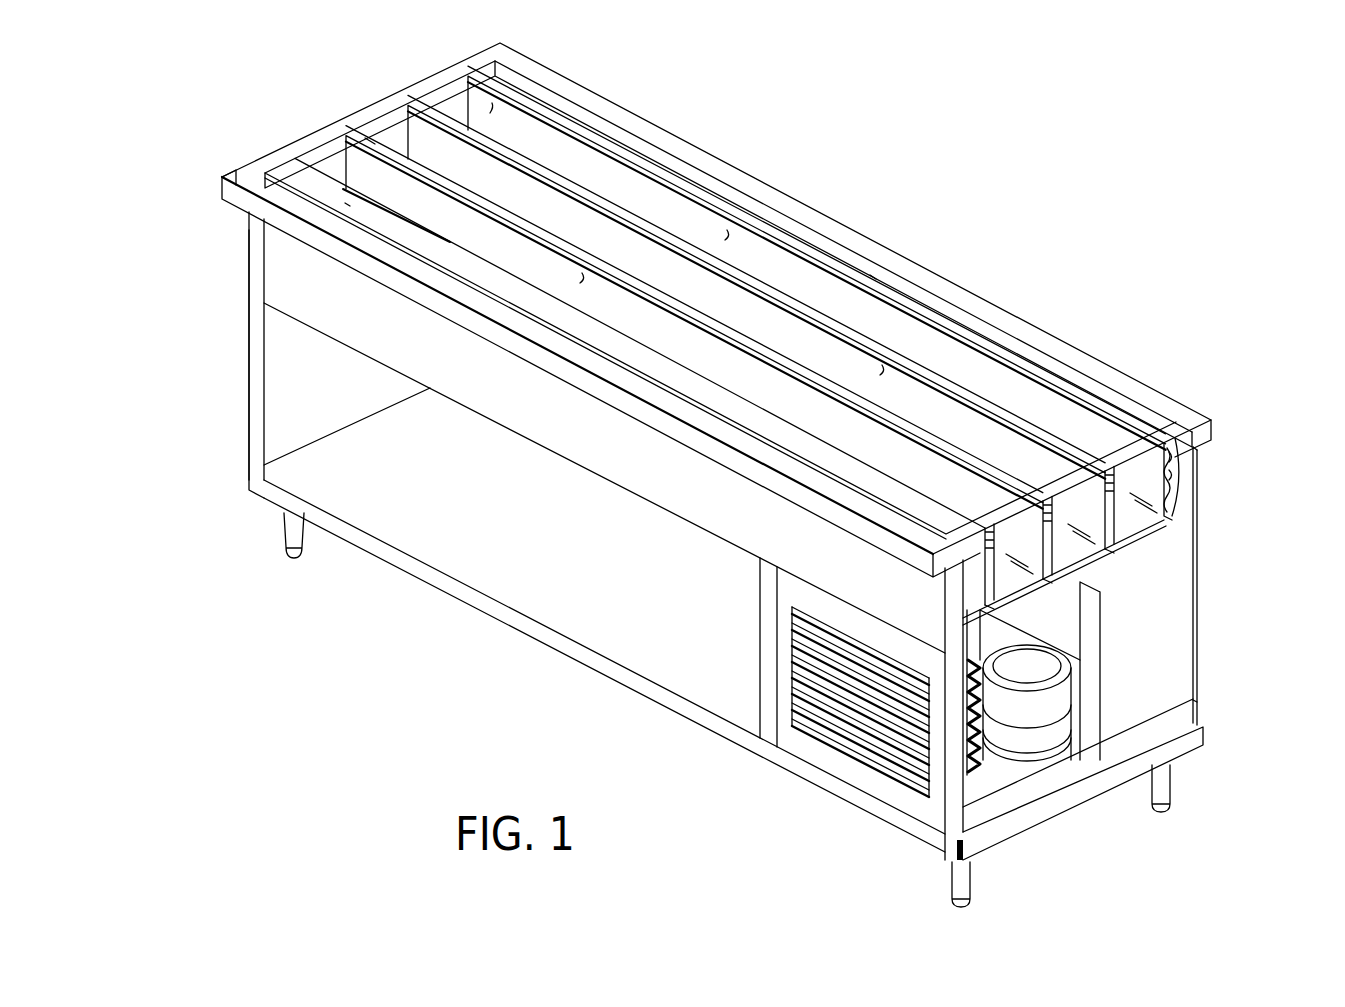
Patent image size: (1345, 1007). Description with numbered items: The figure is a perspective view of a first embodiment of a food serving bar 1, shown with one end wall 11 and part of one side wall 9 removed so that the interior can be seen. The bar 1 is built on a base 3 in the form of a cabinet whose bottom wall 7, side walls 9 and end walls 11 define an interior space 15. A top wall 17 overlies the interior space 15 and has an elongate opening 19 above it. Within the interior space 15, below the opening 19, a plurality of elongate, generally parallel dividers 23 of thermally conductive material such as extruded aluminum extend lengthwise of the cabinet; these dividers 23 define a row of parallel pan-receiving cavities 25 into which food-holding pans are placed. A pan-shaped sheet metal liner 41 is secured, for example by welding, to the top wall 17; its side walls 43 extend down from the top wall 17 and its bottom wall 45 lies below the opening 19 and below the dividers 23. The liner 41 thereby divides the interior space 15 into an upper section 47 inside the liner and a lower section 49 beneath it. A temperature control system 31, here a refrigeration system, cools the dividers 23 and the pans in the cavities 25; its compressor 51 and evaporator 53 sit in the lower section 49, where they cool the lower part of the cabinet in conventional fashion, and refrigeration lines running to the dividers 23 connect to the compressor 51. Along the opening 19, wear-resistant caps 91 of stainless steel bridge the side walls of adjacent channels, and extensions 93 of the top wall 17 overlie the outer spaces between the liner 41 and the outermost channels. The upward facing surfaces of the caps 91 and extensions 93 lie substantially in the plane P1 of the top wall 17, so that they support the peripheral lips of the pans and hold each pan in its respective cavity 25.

The food serving bar 1 is at (707, 472).
The base 3 is at (247, 368).
The bottom wall 7 is at (497, 608).
The side walls 9 is at (768, 703).
The end walls 11 is at (248, 266).
The interior space 15 is at (1200, 660).
The top wall 17 is at (1200, 413).
The opening 19 is at (490, 113).
The dividers 23 is at (739, 468).
The pan-receiving cavities 25 is at (580, 283).
The temperature control system 31 is at (1200, 705).
The pan-shaped liner 41 is at (1178, 497).
The side walls 43 is at (1178, 452).
The bottom wall 45 is at (1147, 532).
The upper section 47 is at (1141, 462).
The lower section 49 is at (1141, 572).
The compressor 51 is at (1072, 660).
The evaporator 53 is at (1043, 718).
The caps 91 is at (368, 138).
The extensions 93 is at (345, 203).
The plane P1 is at (218, 194).